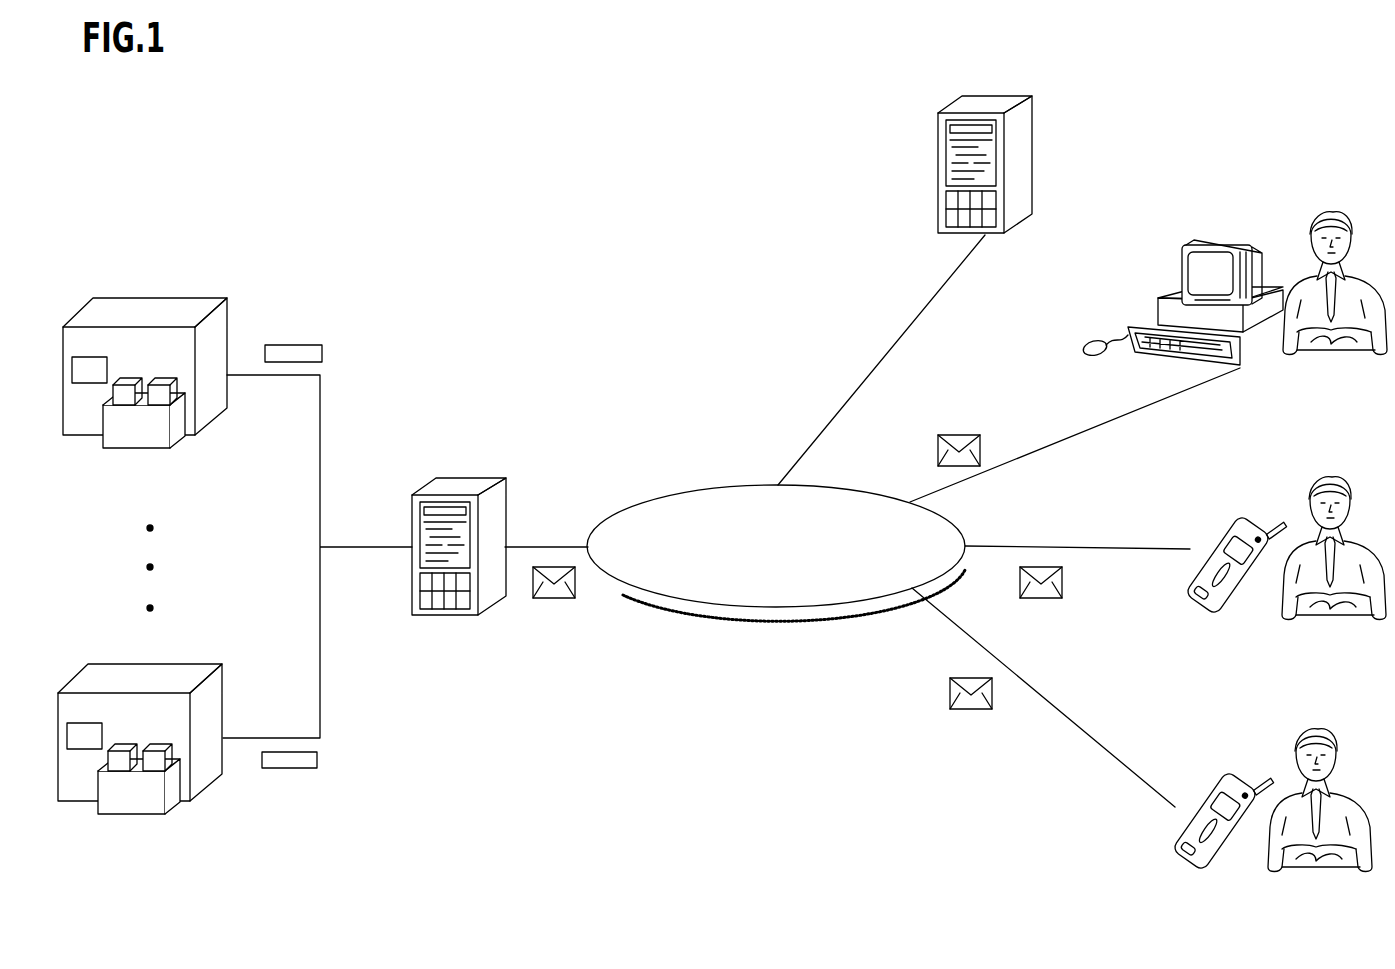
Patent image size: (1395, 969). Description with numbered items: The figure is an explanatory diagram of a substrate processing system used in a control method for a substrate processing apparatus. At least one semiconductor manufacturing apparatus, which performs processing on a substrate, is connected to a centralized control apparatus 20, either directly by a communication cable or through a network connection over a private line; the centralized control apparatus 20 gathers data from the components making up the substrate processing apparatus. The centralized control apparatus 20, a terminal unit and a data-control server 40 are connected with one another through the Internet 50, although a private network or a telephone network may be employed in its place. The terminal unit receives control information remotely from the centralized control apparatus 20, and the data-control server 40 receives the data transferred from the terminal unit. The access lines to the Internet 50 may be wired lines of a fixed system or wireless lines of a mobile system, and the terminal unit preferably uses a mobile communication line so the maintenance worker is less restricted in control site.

The centralized control apparatus 20 is at (460, 478).
The data-control server 40 is at (1033, 167).
The Internet 50 is at (773, 607).